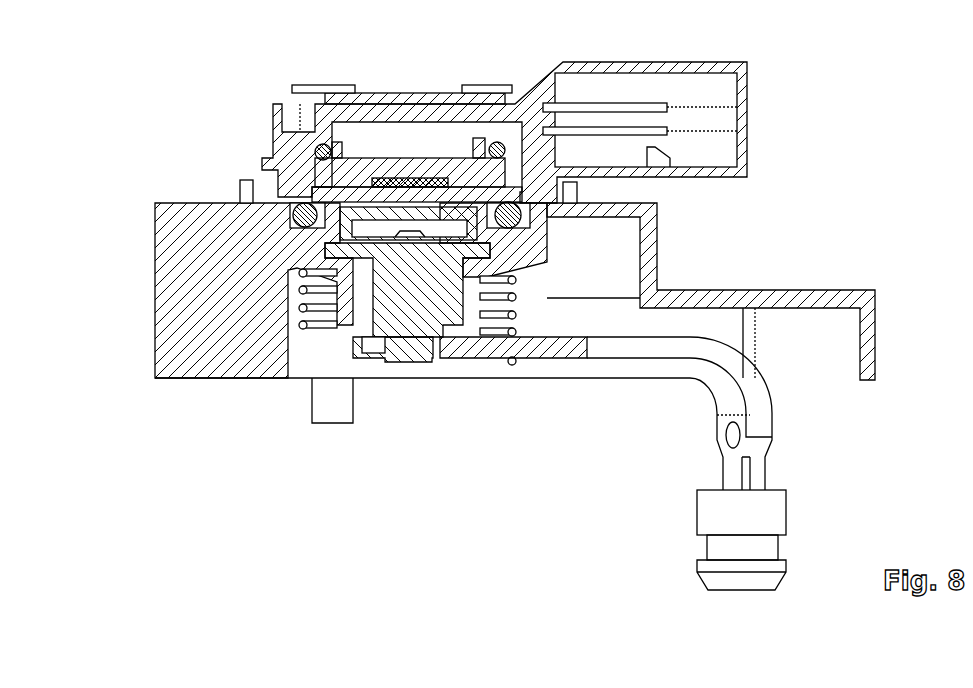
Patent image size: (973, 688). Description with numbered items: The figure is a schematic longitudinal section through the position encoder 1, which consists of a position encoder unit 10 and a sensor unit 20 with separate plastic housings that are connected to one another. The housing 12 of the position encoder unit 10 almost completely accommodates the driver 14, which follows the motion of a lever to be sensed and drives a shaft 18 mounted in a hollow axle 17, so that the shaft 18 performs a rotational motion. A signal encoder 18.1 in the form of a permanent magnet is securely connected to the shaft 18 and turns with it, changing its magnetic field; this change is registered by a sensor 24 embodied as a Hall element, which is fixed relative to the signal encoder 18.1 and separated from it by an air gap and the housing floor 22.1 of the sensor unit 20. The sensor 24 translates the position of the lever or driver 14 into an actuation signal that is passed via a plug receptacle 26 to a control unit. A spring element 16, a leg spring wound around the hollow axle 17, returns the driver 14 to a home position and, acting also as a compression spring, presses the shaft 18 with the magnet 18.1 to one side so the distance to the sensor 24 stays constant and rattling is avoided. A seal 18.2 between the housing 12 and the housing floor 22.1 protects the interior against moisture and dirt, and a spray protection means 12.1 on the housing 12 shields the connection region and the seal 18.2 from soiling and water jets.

The position encoder 1 is at (108, 62).
The position encoder unit 10 is at (132, 268).
The housing 12 is at (168, 334).
The spray protection means 12.1 is at (243, 192).
The driver 14 is at (766, 422).
The spring element 16 is at (305, 332).
The hollow axle 17 is at (372, 345).
The shaft 18 is at (400, 360).
The signal encoder 18.1 is at (362, 216).
The seal 18.2 is at (296, 220).
The sensor unit 20 is at (240, 122).
The housing floor 22.1 is at (452, 196).
The sensor 24 is at (405, 178).
The plug receptacle 26 is at (722, 118).